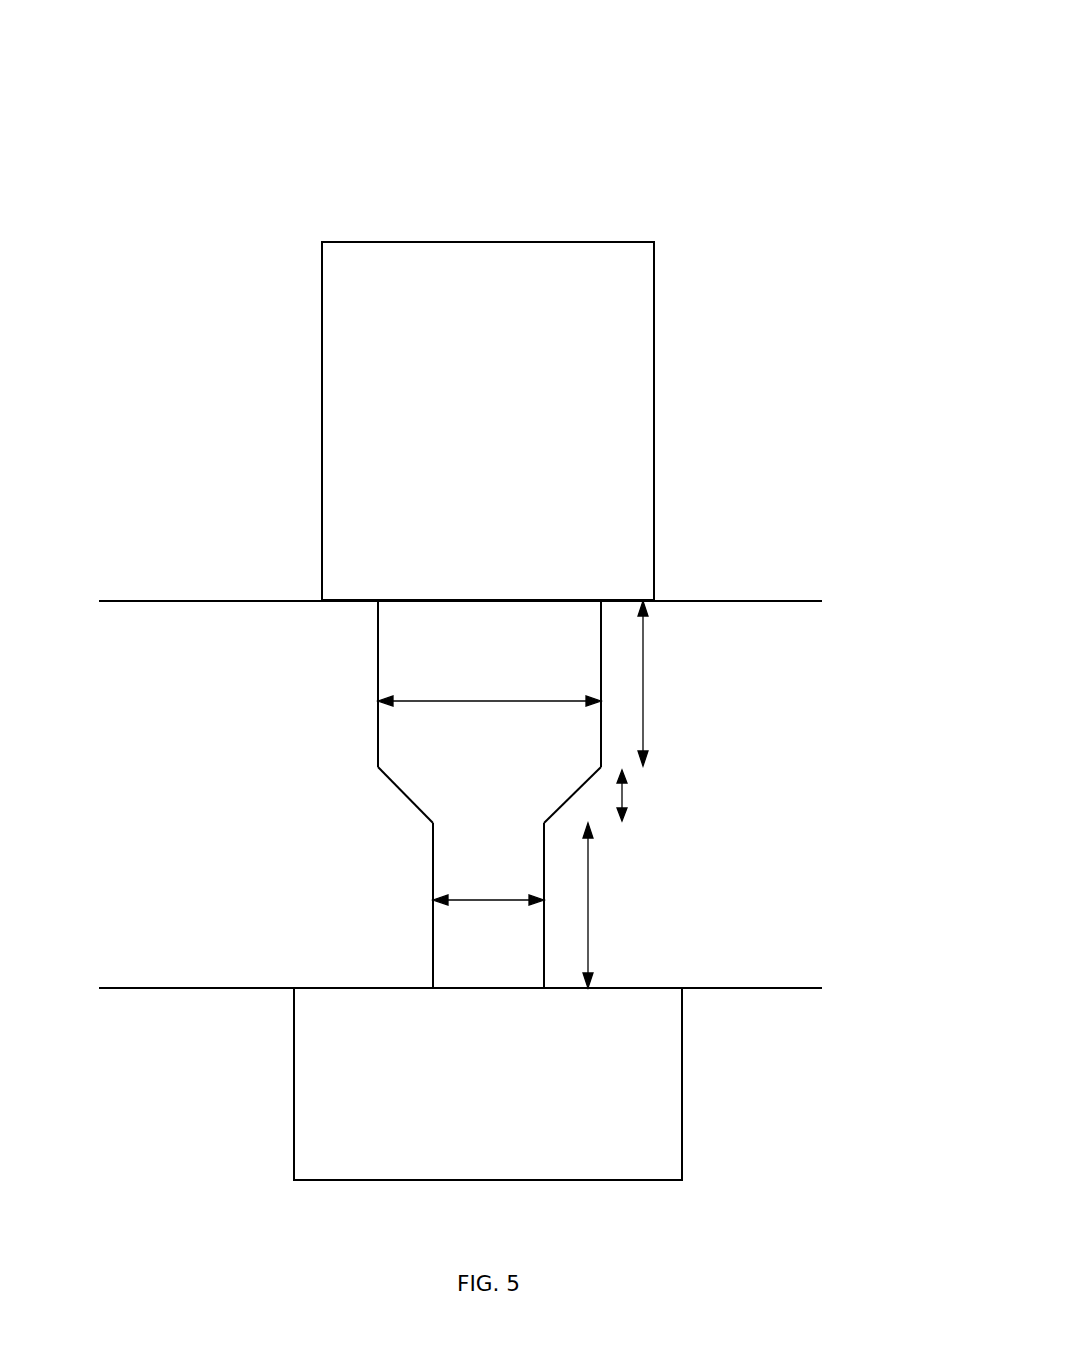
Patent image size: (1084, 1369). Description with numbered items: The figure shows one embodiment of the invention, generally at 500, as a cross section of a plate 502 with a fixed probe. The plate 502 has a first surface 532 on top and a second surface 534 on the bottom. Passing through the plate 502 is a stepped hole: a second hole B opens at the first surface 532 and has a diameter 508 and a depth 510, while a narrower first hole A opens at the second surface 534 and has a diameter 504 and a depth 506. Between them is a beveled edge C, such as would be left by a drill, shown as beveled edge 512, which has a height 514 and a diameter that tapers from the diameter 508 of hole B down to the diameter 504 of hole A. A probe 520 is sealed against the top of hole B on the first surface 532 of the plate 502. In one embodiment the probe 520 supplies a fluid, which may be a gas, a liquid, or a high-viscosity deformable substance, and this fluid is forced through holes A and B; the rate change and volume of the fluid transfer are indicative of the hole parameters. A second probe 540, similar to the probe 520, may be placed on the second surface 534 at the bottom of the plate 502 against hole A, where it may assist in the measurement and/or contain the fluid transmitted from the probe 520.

The embodiment of the invention 500 is at (765, 26).
The plate 502 is at (598, 794).
The diameter of first hole A 504 is at (488, 885).
The depth of first hole A 506 is at (611, 905).
The diameter of second hole B 508 is at (489, 687).
The depth of second hole B 510 is at (667, 683).
The beveled edge 512 is at (386, 780).
The height of beveled edge 514 is at (644, 795).
The probe 520 is at (488, 421).
The first surface 532 is at (739, 601).
The second surface 534 is at (766, 988).
The probe 540 is at (488, 1084).
The first hole A is at (478, 944).
The second hole B is at (408, 662).
The beveled edge C is at (410, 808).